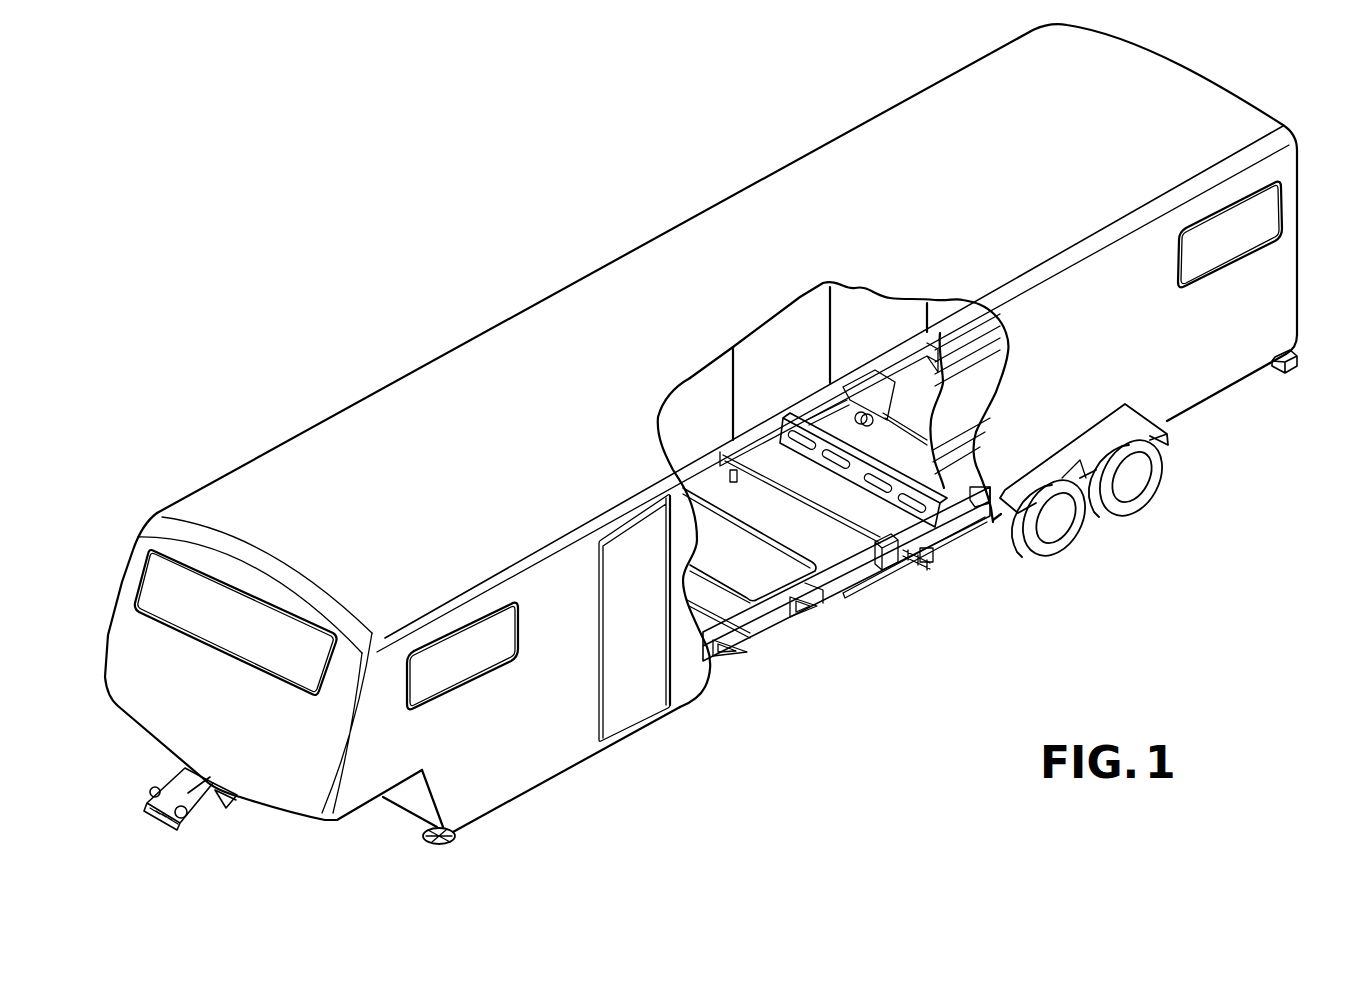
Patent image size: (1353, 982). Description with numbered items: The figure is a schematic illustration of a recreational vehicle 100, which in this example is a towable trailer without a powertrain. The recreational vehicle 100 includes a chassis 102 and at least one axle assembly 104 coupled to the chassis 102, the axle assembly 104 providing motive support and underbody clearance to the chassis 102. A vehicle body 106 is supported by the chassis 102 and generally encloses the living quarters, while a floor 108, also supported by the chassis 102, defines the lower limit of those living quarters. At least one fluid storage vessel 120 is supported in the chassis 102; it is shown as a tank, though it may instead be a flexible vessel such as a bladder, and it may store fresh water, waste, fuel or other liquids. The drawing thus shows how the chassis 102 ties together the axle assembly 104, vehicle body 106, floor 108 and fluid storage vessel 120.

The recreational vehicle 100 is at (701, 434).
The chassis 102 is at (836, 535).
The axle assembly 104 is at (1180, 477).
The vehicle body 106 is at (701, 434).
The floor 108 is at (945, 470).
The fluid storage vessel 120 is at (867, 407).